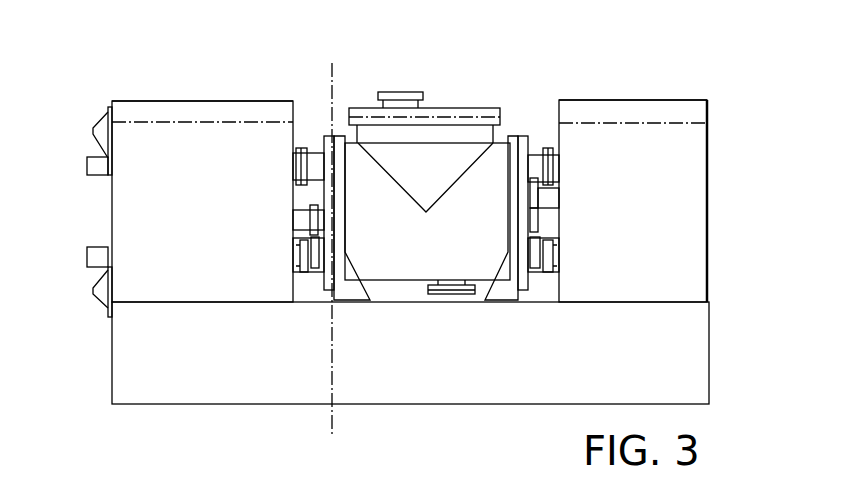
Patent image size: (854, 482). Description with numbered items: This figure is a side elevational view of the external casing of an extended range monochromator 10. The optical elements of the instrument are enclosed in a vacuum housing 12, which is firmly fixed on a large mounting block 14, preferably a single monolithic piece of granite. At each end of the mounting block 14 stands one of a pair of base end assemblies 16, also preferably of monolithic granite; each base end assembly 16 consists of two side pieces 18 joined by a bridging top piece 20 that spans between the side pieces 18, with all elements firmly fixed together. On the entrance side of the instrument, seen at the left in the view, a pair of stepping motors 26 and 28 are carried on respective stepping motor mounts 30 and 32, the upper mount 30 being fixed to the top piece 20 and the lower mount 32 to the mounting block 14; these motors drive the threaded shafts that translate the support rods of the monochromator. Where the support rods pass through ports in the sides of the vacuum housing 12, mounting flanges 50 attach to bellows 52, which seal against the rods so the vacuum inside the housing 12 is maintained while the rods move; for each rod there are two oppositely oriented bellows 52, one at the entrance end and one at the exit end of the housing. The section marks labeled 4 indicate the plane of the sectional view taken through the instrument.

The apparatus 10 is at (589, 55).
The workpiece mount plate 12 is at (471, 109).
The base 14 is at (709, 354).
The guide line 16 is at (293, 122).
The side housing 18 is at (112, 216).
The housing top 20 is at (181, 102).
The drive motor 26 is at (87, 168).
The drive motor 28 is at (87, 257).
The coupling 30 is at (93, 129).
The coupling 32 is at (93, 296).
The clamp plate 50 is at (328, 135).
The roller 52 is at (299, 148).
The section line 4- 4 is at (345, 435).